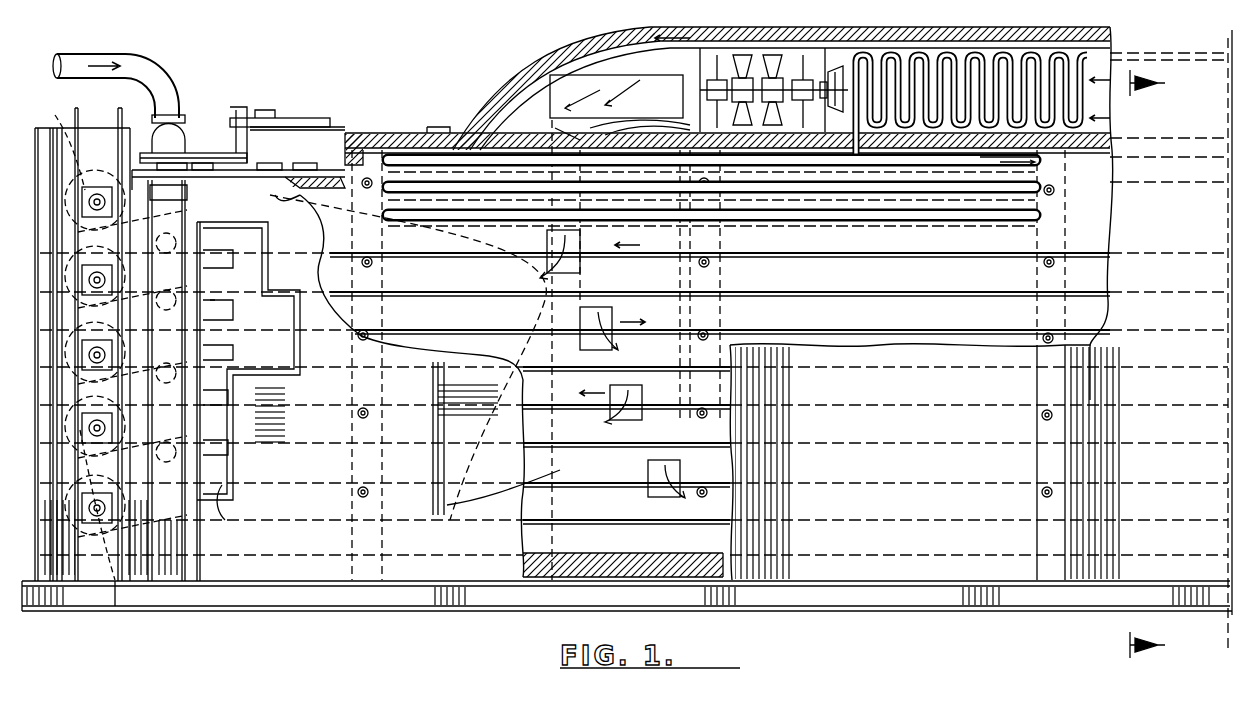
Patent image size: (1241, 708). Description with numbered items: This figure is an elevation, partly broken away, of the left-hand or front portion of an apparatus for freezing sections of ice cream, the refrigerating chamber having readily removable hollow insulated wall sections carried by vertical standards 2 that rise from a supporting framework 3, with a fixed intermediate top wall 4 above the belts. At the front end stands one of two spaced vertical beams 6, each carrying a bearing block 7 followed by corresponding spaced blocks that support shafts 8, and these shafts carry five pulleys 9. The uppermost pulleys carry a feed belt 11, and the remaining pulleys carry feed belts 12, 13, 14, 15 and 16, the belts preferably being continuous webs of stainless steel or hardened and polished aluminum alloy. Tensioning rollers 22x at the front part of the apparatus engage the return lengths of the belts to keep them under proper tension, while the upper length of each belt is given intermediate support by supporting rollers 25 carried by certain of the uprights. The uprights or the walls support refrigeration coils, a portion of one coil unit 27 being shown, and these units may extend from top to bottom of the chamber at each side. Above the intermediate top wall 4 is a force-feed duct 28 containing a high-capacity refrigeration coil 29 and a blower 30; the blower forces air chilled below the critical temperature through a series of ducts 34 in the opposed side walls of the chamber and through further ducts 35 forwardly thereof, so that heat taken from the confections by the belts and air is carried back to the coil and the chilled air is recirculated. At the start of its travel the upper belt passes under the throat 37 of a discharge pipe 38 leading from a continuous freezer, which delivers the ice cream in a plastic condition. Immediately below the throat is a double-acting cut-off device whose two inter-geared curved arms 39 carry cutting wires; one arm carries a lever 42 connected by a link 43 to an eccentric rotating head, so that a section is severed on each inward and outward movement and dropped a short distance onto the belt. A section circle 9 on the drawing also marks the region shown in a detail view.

The vertical standards 2 is at (382, 270).
The supporting framework 3 is at (635, 58).
The intermediate top wall 4 is at (940, 160).
The vertical beam 6 is at (100, 125).
The bearing block 7 is at (112, 200).
The shafts 8 is at (126, 353).
The pulleys 9 is at (130, 598).
The feed belt 11 is at (340, 188).
The feed belt 12 is at (442, 255).
The feed belt 13 is at (462, 330).
The feed belt 14 is at (497, 438).
The feed belt 15 is at (580, 475).
The feed belt 16 is at (582, 485).
The tensioning rollers 22x is at (215, 440).
The supporting rollers 25 is at (370, 267).
The coil unit 27 is at (1040, 200).
The force-feed duct 28 is at (520, 90).
The refrigeration coil 29 is at (1090, 100).
The blower 30 is at (690, 134).
The ducts 34 is at (610, 130).
The ducts 35 is at (228, 422).
The throat 37 is at (185, 130).
The discharge pipe 38 is at (165, 80).
The curved arms 39 is at (190, 153).
The lever 42 is at (275, 110).
The link 43 is at (300, 120).